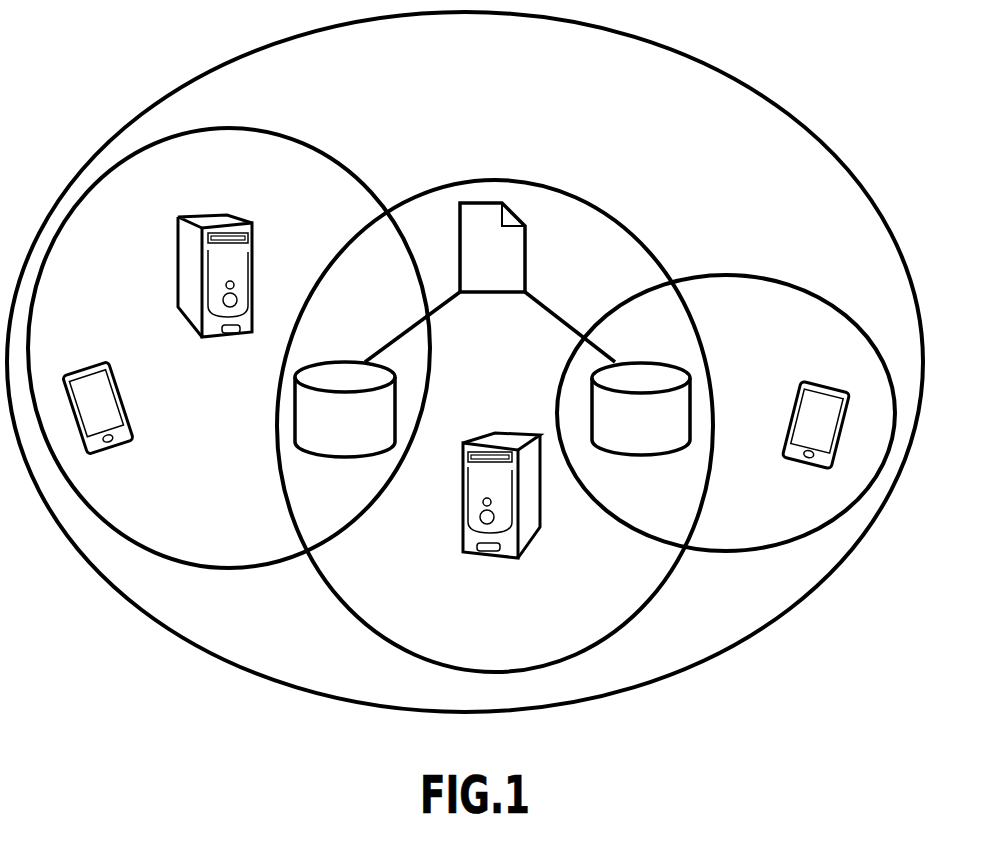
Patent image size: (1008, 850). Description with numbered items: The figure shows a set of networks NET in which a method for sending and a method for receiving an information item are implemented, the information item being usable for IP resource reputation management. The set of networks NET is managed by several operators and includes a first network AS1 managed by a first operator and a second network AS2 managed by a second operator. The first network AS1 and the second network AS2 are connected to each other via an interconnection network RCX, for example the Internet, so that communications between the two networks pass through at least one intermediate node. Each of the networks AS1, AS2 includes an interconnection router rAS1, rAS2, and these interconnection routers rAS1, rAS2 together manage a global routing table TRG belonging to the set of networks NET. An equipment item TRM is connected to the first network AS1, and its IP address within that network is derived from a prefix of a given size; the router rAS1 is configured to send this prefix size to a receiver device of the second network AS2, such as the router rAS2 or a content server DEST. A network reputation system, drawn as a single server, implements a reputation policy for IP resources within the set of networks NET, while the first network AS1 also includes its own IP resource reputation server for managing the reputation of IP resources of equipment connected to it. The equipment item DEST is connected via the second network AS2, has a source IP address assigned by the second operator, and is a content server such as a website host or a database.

The set of networks NET is at (490, 52).
The first network AS1 is at (238, 543).
The second network AS2 is at (757, 533).
The interconnection network RCX is at (520, 657).
The global routing table TRG is at (490, 282).
The interconnection router rAS1 is at (345, 409).
The interconnection router rAS2 is at (641, 409).
The equipment item TRM is at (100, 405).
The content server DEST is at (817, 420).